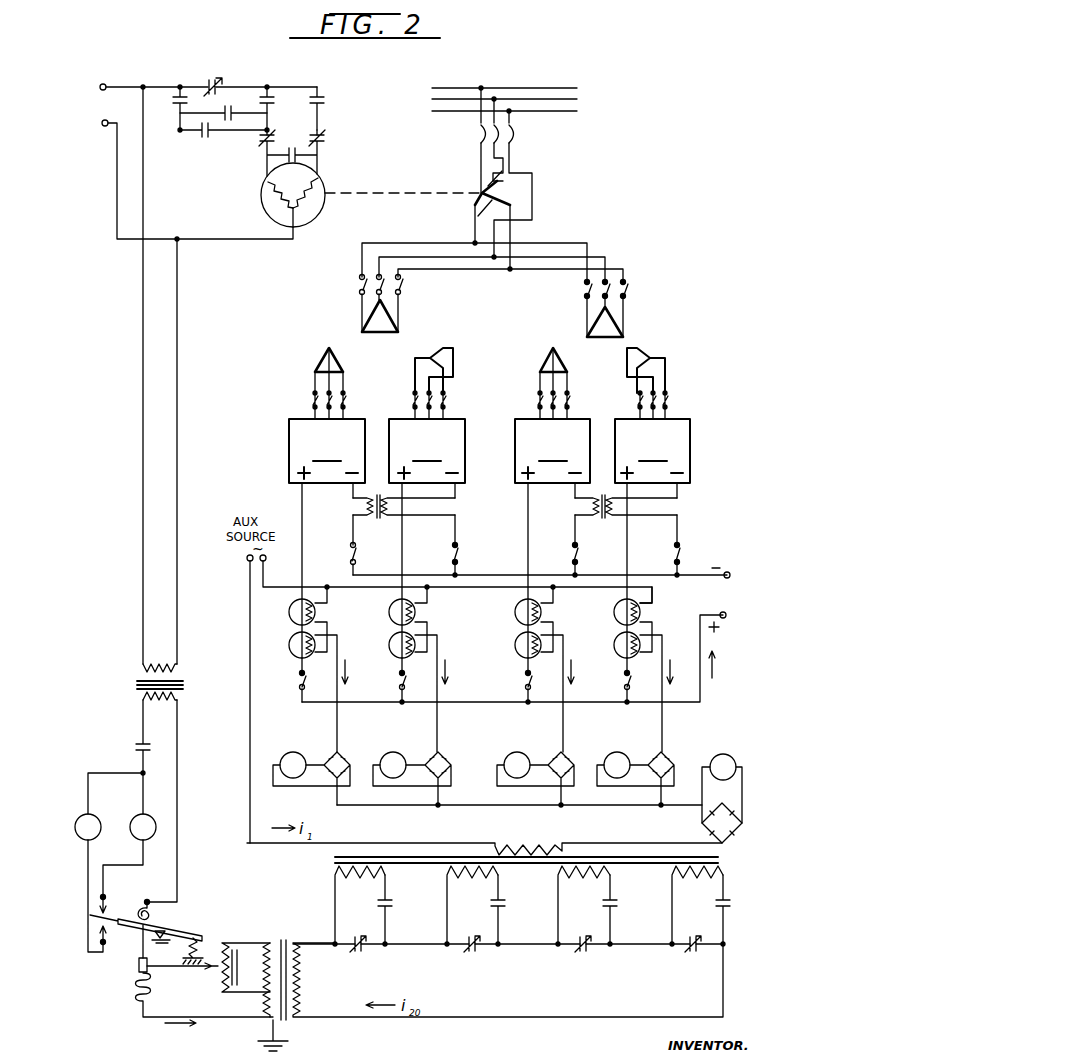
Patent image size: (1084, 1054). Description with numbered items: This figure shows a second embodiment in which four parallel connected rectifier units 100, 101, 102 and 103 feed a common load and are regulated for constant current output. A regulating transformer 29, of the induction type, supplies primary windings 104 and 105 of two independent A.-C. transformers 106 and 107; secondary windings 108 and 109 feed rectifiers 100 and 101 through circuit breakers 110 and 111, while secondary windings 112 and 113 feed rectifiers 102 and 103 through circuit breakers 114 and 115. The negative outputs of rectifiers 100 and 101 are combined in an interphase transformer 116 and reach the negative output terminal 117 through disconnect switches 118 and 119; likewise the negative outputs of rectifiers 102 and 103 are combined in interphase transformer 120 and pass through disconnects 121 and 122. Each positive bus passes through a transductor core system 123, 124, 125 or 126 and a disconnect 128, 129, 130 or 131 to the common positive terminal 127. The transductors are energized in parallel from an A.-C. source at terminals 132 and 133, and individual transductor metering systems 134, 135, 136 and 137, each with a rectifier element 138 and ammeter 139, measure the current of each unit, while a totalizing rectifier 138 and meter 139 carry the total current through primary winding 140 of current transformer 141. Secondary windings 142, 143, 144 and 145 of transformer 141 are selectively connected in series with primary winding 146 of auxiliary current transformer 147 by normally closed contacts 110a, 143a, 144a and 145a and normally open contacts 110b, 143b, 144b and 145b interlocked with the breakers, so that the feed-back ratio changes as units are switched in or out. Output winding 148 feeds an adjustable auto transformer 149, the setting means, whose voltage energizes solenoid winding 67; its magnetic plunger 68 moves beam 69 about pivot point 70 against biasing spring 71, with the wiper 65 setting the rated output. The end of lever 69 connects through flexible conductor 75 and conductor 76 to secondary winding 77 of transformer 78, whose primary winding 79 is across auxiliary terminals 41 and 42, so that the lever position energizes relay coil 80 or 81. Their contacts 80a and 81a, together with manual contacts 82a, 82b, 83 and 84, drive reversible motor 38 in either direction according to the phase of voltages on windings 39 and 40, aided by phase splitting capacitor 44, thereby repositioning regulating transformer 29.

The regulating transformer 29 is at (533, 198).
The reversible motor 38 is at (318, 222).
The motor winding 39 is at (276, 205).
The motor winding 40 is at (330, 210).
The auxiliary source terminal 41 is at (98, 128).
The auxiliary source terminal 42 is at (99, 89).
The phase splitting capacitor 44 is at (292, 149).
The potentiometer wiper 65 is at (178, 972).
The solenoid winding 67 is at (135, 993).
The magnetic plunger 68 is at (139, 965).
The beam 69 is at (158, 925).
The pivot point 70 is at (142, 932).
The biasing spring 71 is at (200, 944).
The flexible conductor 75 is at (140, 904).
The conductor 76 is at (180, 771).
The secondary winding 77 is at (165, 702).
The transformer 78 is at (127, 686).
The primary winding 79 is at (167, 665).
The relay coil 80 is at (149, 816).
The contact 80a is at (333, 104).
The relay coil 81 is at (80, 817).
The contact 81a is at (252, 108).
The manually operable contact means 82a is at (167, 108).
The manually operable contact means 82b is at (234, 70).
The manually operable contact means 83 is at (205, 138).
The manually operable contact means 84 is at (240, 123).
The rectifier unit 100 is at (327, 538).
The rectifier unit 101 is at (427, 538).
The rectifier unit 102 is at (552, 538).
The rectifier unit 103 is at (652, 538).
The primary winding 104 is at (397, 326).
The primary winding 105 is at (622, 332).
The A.-C. transformer 106 is at (402, 353).
The A.-C. transformer 107 is at (631, 359).
The secondary winding 108 is at (314, 356).
The secondary winding 109 is at (420, 369).
The circuit breaker 110 is at (353, 402).
The normally closed contact 110a is at (374, 932).
The normally open contact 110b is at (389, 910).
The circuit breaker 111 is at (460, 402).
The secondary winding 112 is at (565, 341).
The secondary winding 113 is at (665, 363).
The circuit breaker 114 is at (578, 402).
The circuit breaker 115 is at (630, 402).
The interphase transformer 116 is at (404, 519).
The negative output terminal 117 is at (731, 577).
The disconnect switch 118 is at (362, 560).
The disconnect switch 119 is at (462, 558).
The interphase transformer 120 is at (602, 521).
The disconnect switch 121 is at (568, 560).
The disconnect switch 122 is at (668, 560).
The transductor core system 123 is at (290, 632).
The transductor core system 124 is at (390, 632).
The transductor core system 125 is at (513, 630).
The transductor core system 126 is at (615, 630).
The positive output terminal 127 is at (729, 616).
The disconnect switch 128 is at (296, 685).
The disconnect switch 129 is at (398, 686).
The disconnect switch 130 is at (523, 686).
The disconnect switch 131 is at (622, 688).
The A.-C. source terminal 132 is at (246, 560).
The A.-C. source terminal 133 is at (267, 562).
The transductor metering system 134 is at (309, 745).
The transductor metering system 135 is at (420, 748).
The transductor metering system 136 is at (545, 749).
The transductor metering system 137 is at (642, 749).
The rectifier element 138 is at (332, 754).
The ammeter 139 is at (286, 753).
The primary winding 140 is at (555, 843).
The current transformer 141 is at (742, 875).
The secondary winding 142 is at (361, 880).
The secondary winding 143 is at (474, 880).
The normally closed contact 143a is at (487, 932).
The normally open contact 143b is at (503, 910).
The secondary winding 144 is at (586, 880).
The normally closed contact 144a is at (596, 932).
The normally open contact 144b is at (615, 910).
The secondary winding 145 is at (700, 880).
The normally closed contact 145a is at (706, 932).
The normally open contact 145b is at (733, 906).
The primary winding 146 is at (301, 989).
The auxiliary current transformer 147 is at (300, 1034).
The output winding 148 is at (264, 982).
The adjustable auto transformer 149 is at (215, 978).